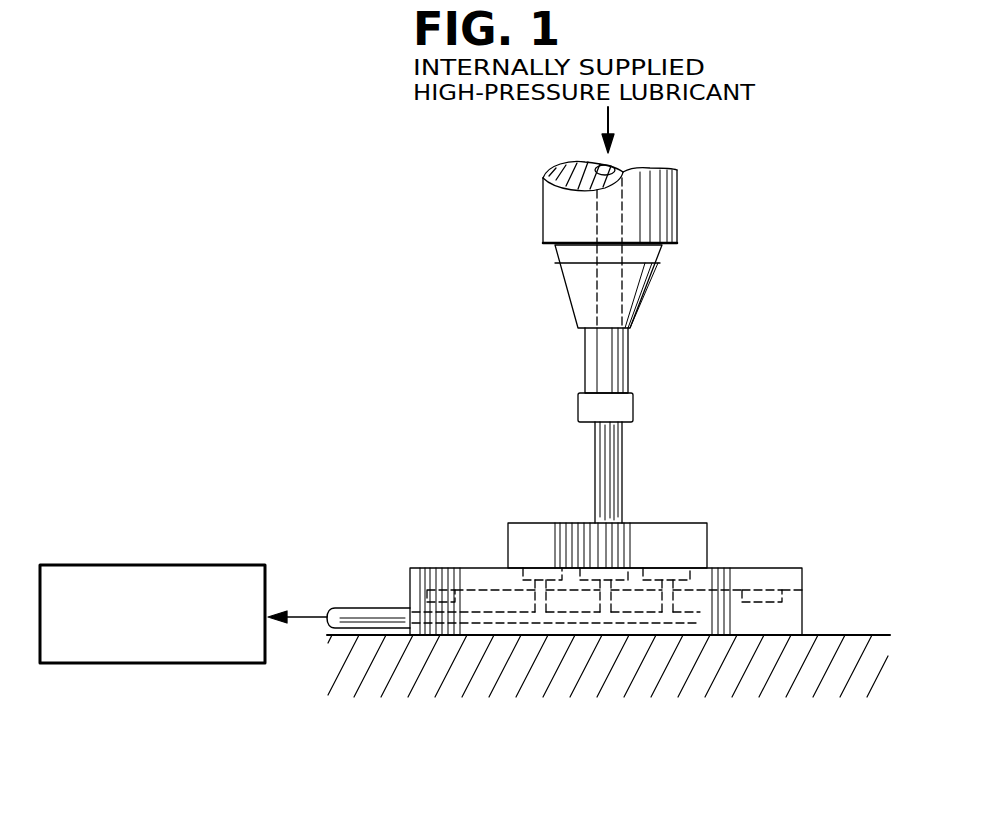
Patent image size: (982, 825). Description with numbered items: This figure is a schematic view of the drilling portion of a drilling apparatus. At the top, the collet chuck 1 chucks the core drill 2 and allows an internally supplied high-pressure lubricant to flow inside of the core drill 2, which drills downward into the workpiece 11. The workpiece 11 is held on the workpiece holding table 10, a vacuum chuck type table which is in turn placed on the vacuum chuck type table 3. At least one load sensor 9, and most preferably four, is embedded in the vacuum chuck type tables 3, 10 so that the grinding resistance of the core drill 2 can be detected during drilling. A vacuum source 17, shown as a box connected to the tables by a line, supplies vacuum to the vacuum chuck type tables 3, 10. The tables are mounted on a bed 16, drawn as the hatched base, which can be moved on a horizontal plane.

The collet chuck 1 is at (572, 282).
The core drill 2 is at (588, 371).
The vacuum chuck type table 3 is at (788, 626).
The load sensor 9 is at (760, 586).
The workpiece holding table 10 is at (803, 578).
The workpiece 11 is at (535, 526).
The bed 16 is at (772, 672).
The vacuum source 17 is at (105, 565).